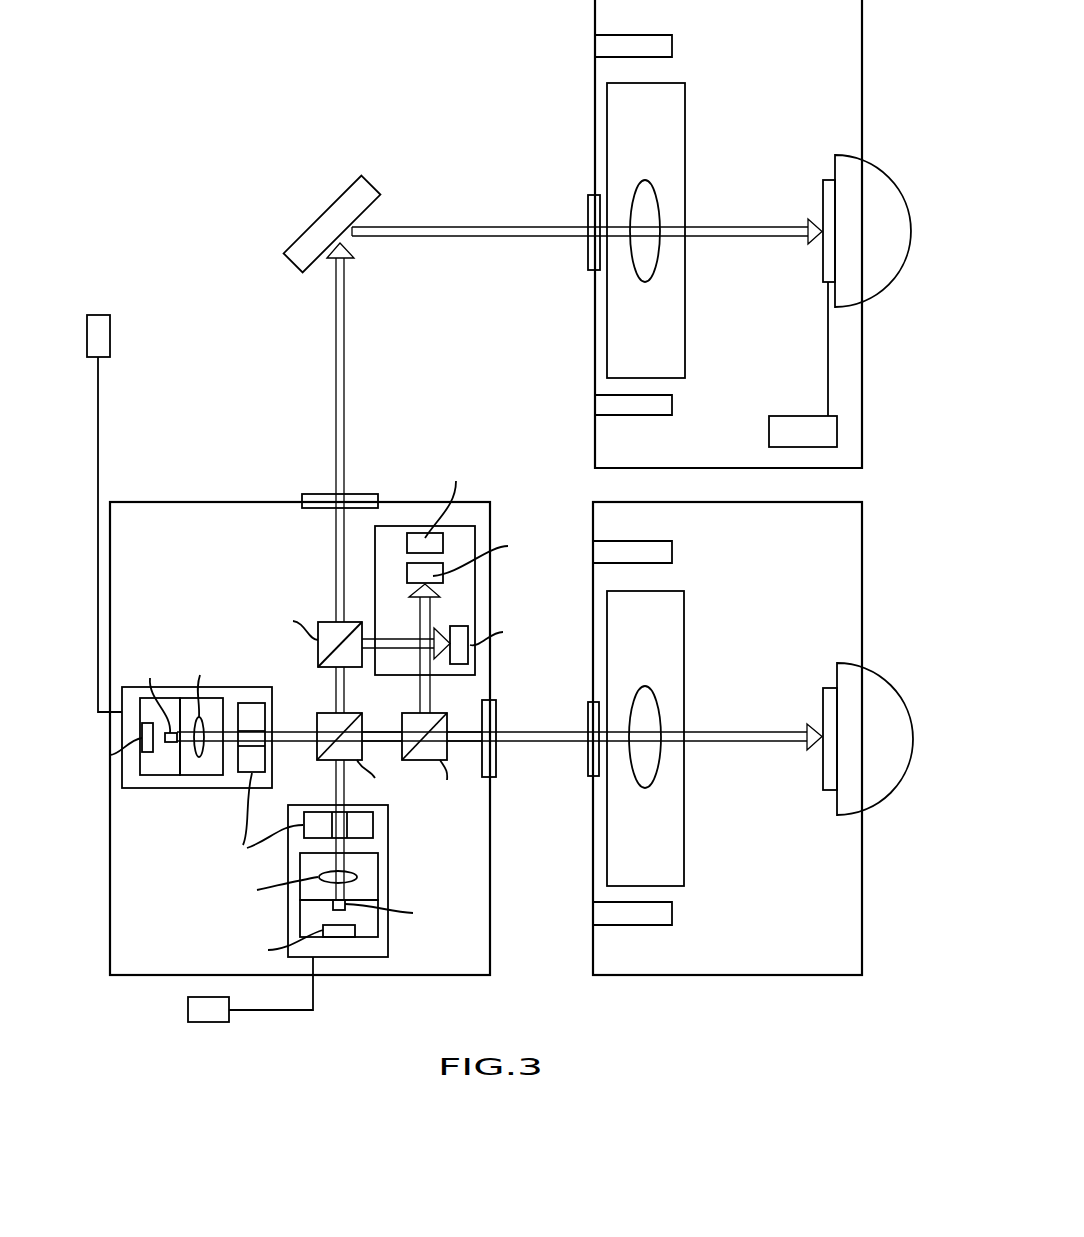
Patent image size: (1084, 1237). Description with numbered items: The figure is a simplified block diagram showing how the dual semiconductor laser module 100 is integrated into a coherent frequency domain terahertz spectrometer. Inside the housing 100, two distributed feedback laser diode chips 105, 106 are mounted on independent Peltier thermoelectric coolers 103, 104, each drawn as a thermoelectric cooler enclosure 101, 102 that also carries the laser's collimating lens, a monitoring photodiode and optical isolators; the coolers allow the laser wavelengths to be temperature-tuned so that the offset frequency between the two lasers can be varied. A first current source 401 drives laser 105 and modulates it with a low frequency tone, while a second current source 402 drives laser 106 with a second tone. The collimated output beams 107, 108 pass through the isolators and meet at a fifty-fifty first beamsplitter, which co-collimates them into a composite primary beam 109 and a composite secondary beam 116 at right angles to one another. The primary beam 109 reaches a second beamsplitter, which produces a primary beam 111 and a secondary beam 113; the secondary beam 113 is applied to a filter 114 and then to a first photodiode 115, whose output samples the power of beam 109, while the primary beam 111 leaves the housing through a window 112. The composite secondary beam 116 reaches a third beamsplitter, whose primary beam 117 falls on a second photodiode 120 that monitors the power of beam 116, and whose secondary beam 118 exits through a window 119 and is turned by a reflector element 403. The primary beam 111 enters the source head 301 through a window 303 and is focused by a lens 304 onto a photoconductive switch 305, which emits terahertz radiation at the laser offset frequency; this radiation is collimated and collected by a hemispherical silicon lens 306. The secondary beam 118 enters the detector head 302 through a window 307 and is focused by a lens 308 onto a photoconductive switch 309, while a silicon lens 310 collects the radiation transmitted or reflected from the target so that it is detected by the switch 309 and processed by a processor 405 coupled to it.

The dual semiconductor laser module 100 is at (183, 421).
The first DFB laser module (TEC) 101 is at (113, 792).
The second DFB laser module (TEC) 102 is at (383, 966).
The Peltier thermoelectric cooler 103 is at (245, 693).
The Peltier thermoelectric cooler 104 is at (383, 838).
The laser 105 is at (177, 742).
The laser 106 is at (333, 904).
The output beam 107 is at (307, 735).
The output beam 108 is at (337, 777).
The composite primary beam 109 is at (387, 735).
The primary beam 111 is at (465, 743).
The window 112 is at (492, 757).
The secondary beam 113 is at (425, 708).
The filter 114 is at (440, 573).
The first photodiode 115 is at (418, 538).
The composite secondary beam 116 is at (333, 690).
The primary beam 117 is at (397, 638).
The secondary beam 118 is at (337, 347).
The window 119 is at (312, 494).
The second photodiode 120 is at (467, 628).
The source head 301 is at (862, 590).
The detector head 302 is at (862, 92).
The window 303 is at (587, 757).
The lens 304 is at (650, 720).
The PCS 305 is at (818, 770).
The silicon lens 306 is at (870, 818).
The window 307 is at (588, 203).
The lens 308 is at (635, 190).
The PCS 309 is at (821, 193).
The silicon lens 310 is at (868, 300).
The first current source 401 is at (98, 315).
The second current source 402 is at (188, 1008).
The reflector element 403 is at (322, 213).
The processor 405 is at (818, 428).